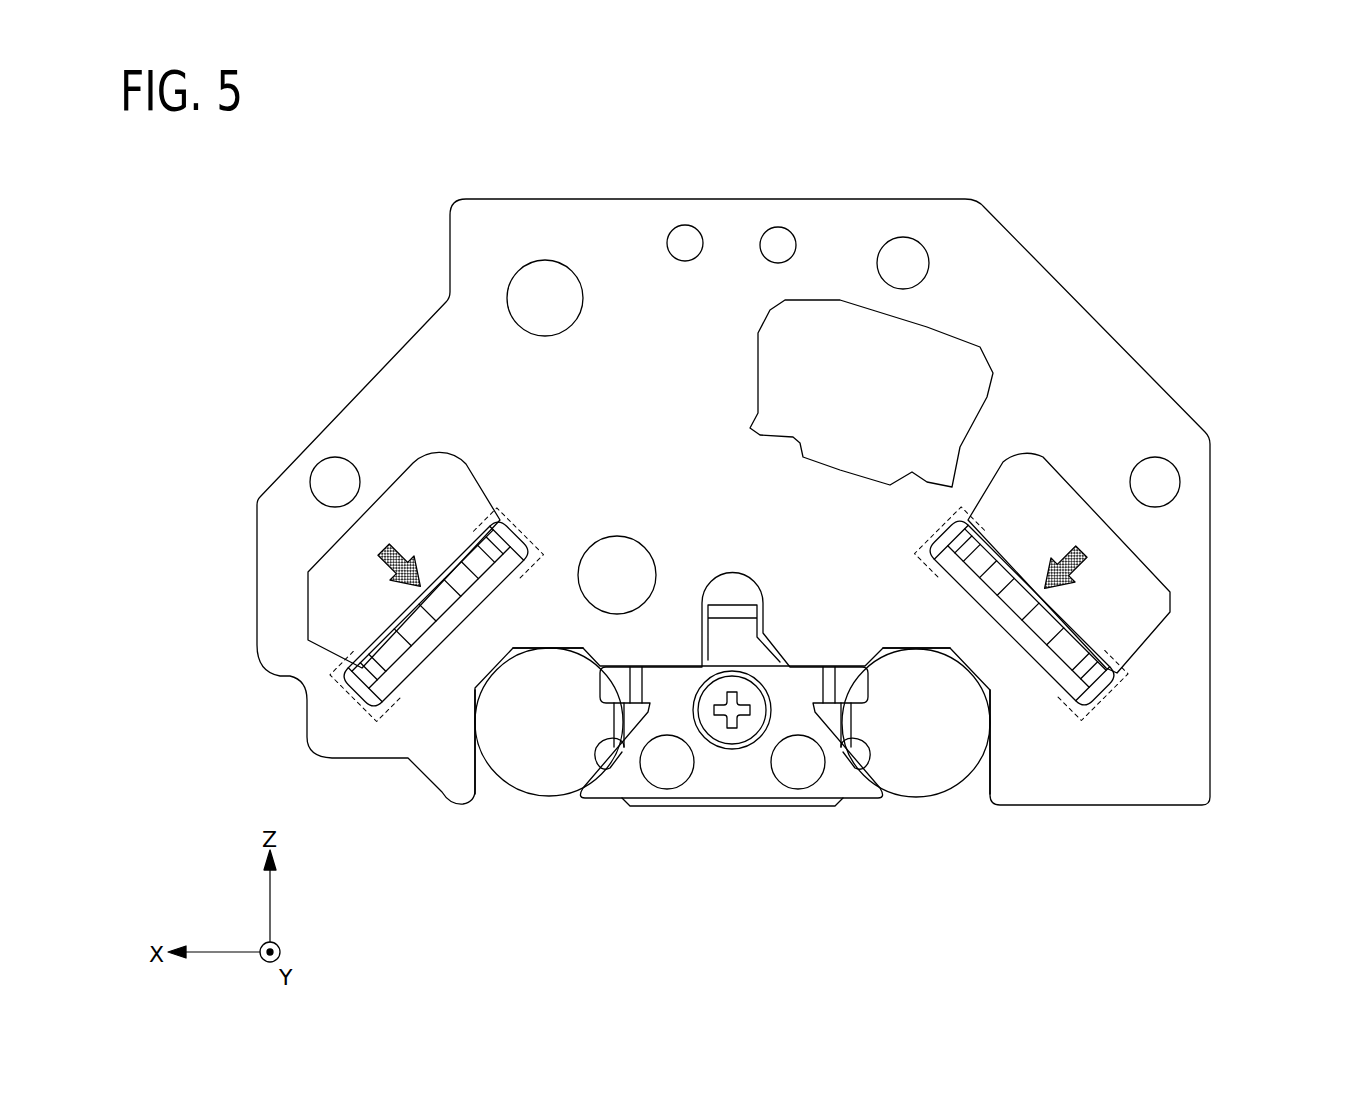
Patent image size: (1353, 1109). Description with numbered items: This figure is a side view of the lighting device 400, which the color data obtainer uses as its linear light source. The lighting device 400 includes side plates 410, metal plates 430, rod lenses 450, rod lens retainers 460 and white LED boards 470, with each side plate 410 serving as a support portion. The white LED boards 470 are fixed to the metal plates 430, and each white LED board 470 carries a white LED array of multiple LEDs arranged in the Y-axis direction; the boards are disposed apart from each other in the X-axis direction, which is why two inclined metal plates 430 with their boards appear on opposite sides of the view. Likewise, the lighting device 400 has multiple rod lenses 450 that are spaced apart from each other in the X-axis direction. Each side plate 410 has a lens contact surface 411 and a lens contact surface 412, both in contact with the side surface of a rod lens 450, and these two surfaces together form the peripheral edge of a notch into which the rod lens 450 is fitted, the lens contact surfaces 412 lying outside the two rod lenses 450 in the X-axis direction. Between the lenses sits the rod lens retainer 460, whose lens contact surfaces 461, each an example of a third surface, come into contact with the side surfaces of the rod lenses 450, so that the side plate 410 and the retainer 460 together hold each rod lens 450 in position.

The lighting device 400 is at (497, 157).
The side plate 410 is at (838, 221).
The lens contact surface 411 is at (575, 652).
The lens contact surface 412 is at (477, 780).
The metal plate 430 is at (383, 632).
The rod lens 450 is at (547, 760).
The rod lens retainer 460 is at (733, 773).
The lens contact surface 461 is at (600, 750).
The white LED board 470 is at (468, 645).